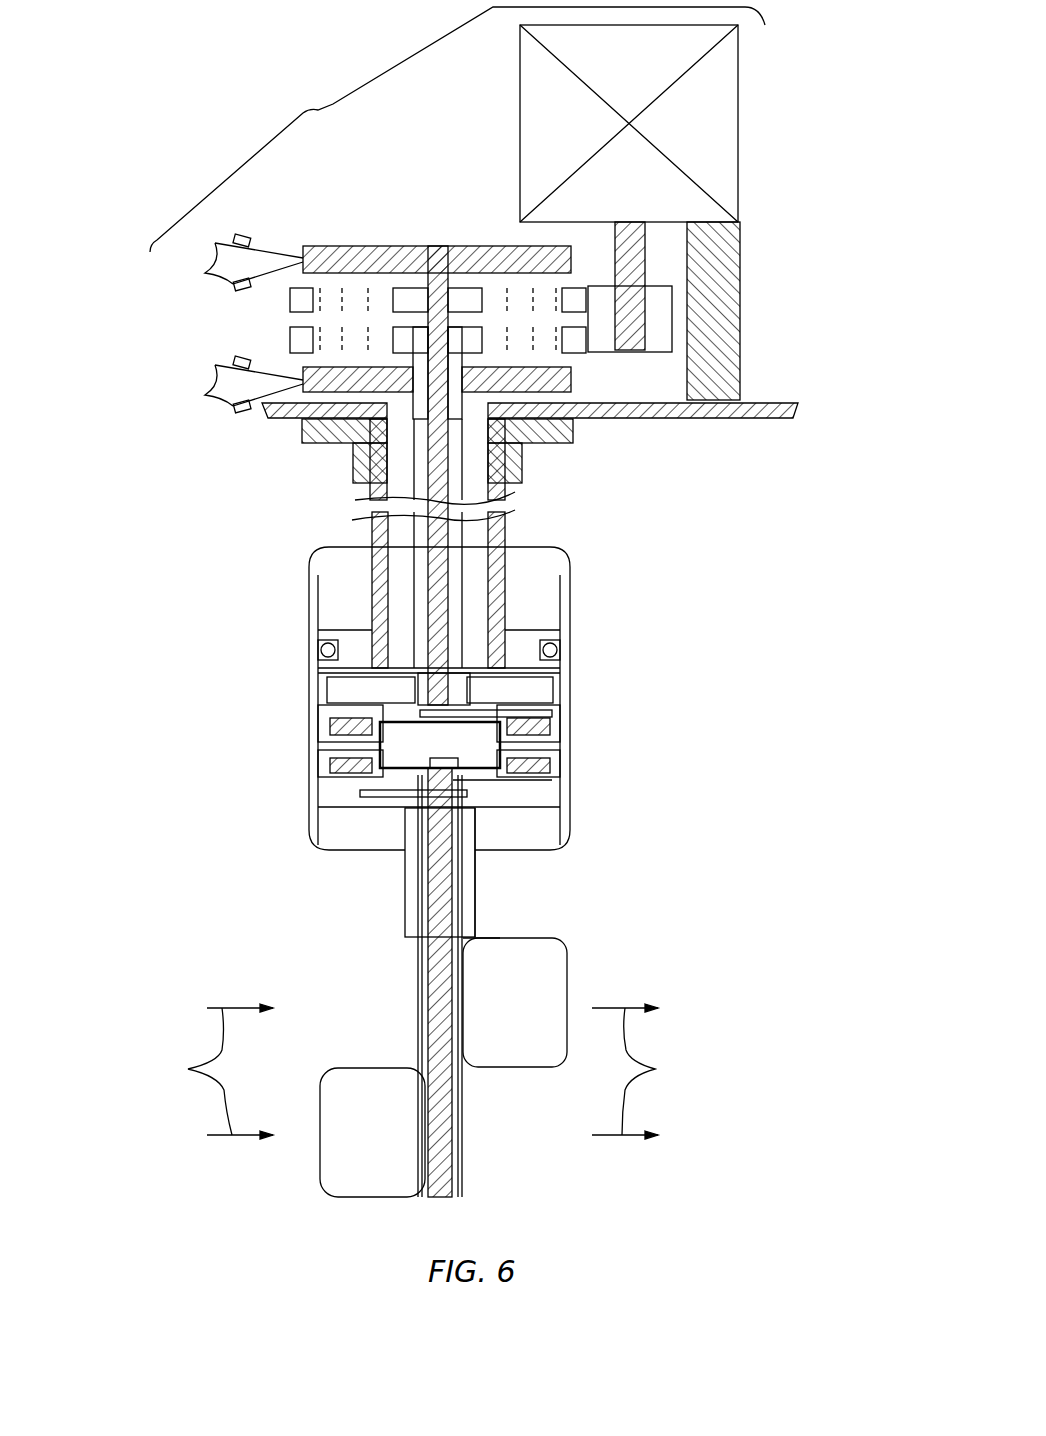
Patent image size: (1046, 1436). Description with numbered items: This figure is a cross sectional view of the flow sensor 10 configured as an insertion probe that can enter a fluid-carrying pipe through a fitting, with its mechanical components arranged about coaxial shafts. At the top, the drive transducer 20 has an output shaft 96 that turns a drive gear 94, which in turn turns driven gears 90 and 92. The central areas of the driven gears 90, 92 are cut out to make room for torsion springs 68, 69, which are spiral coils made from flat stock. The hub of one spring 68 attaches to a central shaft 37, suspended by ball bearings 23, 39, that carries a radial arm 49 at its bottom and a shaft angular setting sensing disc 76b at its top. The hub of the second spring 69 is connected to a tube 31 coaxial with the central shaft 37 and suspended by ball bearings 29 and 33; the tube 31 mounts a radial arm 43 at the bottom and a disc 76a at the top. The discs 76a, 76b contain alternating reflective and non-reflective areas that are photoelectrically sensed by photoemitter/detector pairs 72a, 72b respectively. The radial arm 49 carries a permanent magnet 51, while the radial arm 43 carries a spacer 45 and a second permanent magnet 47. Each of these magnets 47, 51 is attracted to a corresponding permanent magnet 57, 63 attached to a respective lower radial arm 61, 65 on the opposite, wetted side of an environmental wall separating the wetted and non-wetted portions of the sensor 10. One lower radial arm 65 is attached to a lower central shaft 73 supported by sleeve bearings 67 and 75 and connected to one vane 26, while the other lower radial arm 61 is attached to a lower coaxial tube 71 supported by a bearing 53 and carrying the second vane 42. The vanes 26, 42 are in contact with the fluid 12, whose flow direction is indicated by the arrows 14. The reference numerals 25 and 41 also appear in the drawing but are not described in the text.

The flow sensor 10 is at (333, 104).
The fluid 12 is at (222, 952).
The arrows 14 is at (416, 1071).
The drive transducer 20 is at (520, 123).
The ball bearing 23 is at (365, 421).
The step flange 25 is at (322, 444).
The vane 26 is at (382, 1068).
The ball bearing 29 is at (372, 487).
The tube 31 is at (410, 512).
The ball bearing 33 is at (480, 630).
The central shaft 37 is at (452, 550).
The ball bearing 39 is at (425, 677).
The housing 41 is at (570, 628).
The vane 42 is at (510, 1068).
The radial arm 43 is at (318, 690).
The spacer 45 is at (318, 712).
The permanent magnet 47 is at (318, 722).
The radial arm 49 is at (533, 708).
The permanent magnet 51 is at (556, 718).
The bearing 53 is at (405, 900).
The permanent magnet 57 is at (318, 765).
The radial arm 61 is at (347, 800).
The permanent magnet 63 is at (556, 762).
The radial arm 65 is at (530, 783).
The sleeve bearing 67 is at (417, 875).
The torsion spring 68 is at (535, 303).
The torsion spring 69 is at (556, 380).
The lower coaxial tube 71 is at (475, 880).
The photoemitter/detector pair 72a is at (208, 274).
The photoemitter/detector pair 72b is at (208, 386).
The lower central shaft 73 is at (470, 952).
The sleeve bearing 75 is at (415, 985).
The disc 76a is at (527, 392).
The disc 76b is at (346, 246).
The driven gear 90 is at (585, 289).
The driven gear 92 is at (580, 355).
The drive gear 94 is at (672, 307).
The output shaft 96 is at (645, 255).